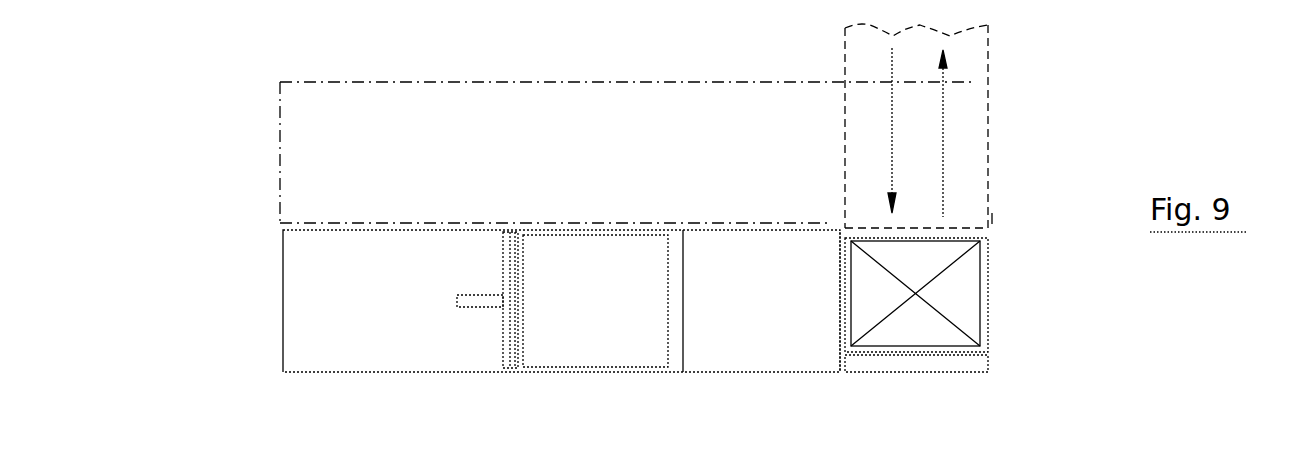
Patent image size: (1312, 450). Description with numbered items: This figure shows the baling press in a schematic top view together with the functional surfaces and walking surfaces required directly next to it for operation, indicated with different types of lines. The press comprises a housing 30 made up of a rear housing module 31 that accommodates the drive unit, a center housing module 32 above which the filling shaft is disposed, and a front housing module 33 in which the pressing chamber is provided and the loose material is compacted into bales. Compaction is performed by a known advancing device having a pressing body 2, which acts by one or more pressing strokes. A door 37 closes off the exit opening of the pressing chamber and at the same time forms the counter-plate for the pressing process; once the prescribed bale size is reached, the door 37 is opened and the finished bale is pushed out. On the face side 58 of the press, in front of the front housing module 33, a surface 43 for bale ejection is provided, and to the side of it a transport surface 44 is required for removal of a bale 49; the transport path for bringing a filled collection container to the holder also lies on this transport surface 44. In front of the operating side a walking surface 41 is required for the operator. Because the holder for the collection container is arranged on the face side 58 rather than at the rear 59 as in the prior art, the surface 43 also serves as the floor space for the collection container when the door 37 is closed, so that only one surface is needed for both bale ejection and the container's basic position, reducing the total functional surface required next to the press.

The pressing body 2 is at (503, 333).
The housing 30 is at (428, 375).
The rear housing module 31 is at (360, 315).
The center housing module 32 is at (675, 343).
The front housing module 33 is at (770, 315).
The door 37 is at (930, 365).
The walking surface 41 is at (404, 113).
The surface for bale ejection 43 is at (983, 255).
The transport surface 44 is at (982, 48).
The bale 49 is at (907, 328).
The face side 58 is at (998, 323).
The rear side 59 is at (255, 323).